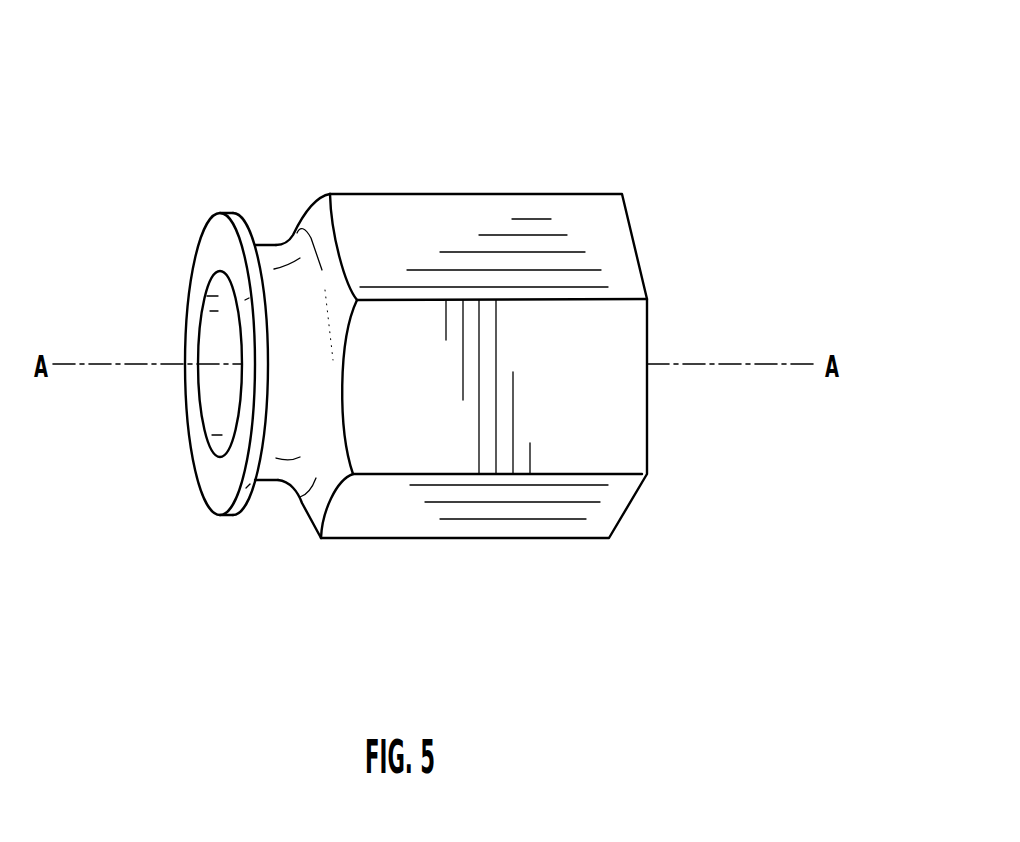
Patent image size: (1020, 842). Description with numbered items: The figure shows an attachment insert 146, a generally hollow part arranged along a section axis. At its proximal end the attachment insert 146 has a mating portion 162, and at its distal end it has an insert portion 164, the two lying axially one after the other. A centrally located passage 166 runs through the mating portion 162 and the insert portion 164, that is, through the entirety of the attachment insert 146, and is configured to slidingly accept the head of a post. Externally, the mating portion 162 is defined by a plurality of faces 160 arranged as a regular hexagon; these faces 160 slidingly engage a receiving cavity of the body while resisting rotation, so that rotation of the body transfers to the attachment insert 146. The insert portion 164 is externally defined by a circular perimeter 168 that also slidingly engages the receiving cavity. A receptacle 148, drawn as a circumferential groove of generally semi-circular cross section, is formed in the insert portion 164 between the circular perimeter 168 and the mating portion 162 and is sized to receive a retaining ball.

The attachment insert 146 is at (549, 109).
The receptacle 148 is at (276, 245).
The faces 160 is at (602, 393).
The mating portion 162 is at (588, 630).
The insert portion 164 is at (305, 630).
The passage 166 is at (214, 405).
The circular perimeter 168 is at (226, 516).